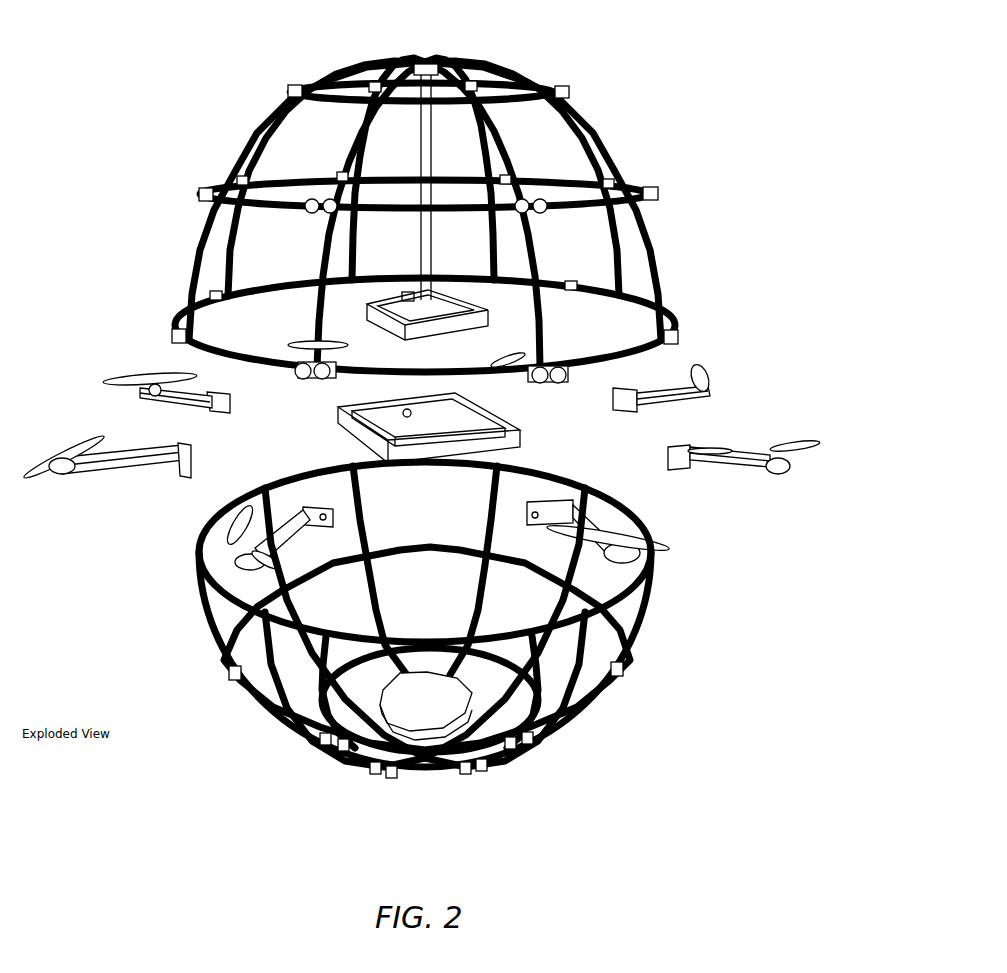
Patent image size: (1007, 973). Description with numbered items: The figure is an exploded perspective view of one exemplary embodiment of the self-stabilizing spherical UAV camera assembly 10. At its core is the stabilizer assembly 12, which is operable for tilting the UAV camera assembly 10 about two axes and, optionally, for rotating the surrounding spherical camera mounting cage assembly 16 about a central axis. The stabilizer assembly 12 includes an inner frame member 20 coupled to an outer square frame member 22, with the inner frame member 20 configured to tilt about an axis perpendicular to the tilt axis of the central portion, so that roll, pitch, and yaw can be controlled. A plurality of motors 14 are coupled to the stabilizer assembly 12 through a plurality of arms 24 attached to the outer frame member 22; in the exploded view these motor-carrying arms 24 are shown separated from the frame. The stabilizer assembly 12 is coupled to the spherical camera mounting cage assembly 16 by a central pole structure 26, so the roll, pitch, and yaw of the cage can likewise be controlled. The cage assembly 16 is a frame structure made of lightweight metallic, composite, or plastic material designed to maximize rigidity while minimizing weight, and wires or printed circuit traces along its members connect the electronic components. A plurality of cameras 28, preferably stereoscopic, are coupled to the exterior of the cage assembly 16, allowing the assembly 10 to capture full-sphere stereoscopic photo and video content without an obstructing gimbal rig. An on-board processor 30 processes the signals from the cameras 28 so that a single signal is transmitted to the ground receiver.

The self-stabilizing spherical UAV camera assembly 10 is at (603, 86).
The stabilizer assembly 12 is at (571, 401).
The motors 14 is at (725, 448).
The spherical camera mounting cage assembly 16 is at (605, 140).
The inner frame member 20 is at (497, 305).
The outer square frame member 22 is at (523, 437).
The arms 24 is at (725, 457).
The central pole structure 26 is at (432, 246).
The cameras 28 is at (656, 192).
The on-board processor 30 is at (455, 700).